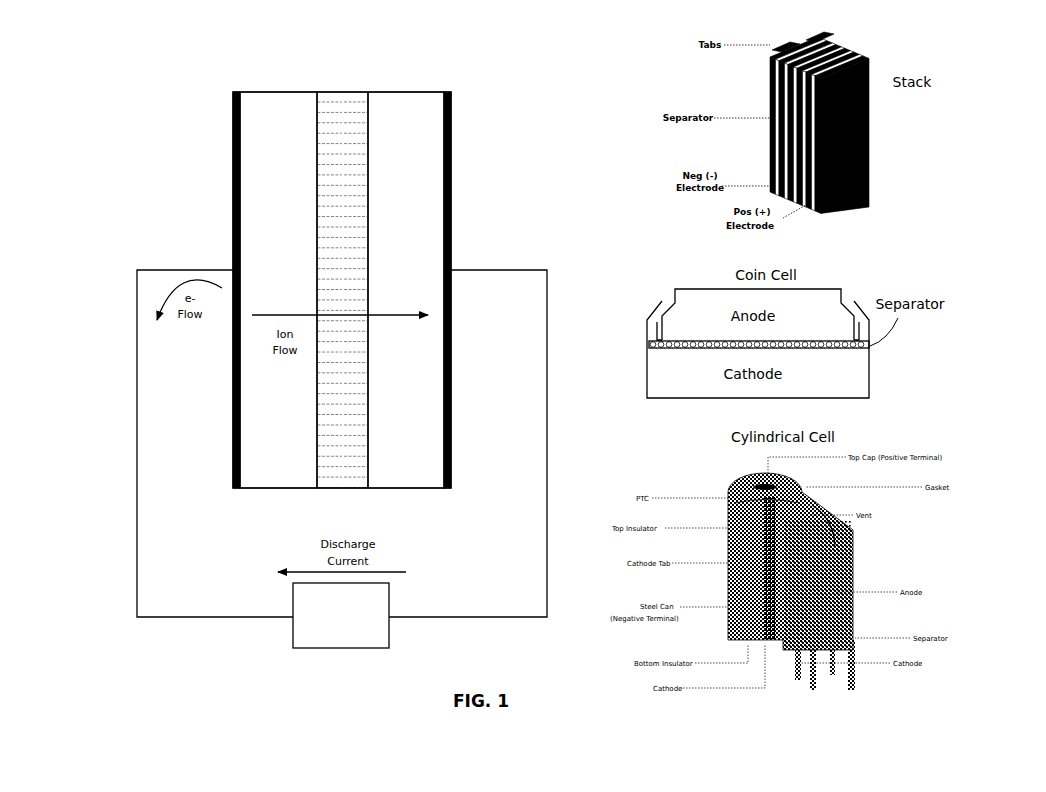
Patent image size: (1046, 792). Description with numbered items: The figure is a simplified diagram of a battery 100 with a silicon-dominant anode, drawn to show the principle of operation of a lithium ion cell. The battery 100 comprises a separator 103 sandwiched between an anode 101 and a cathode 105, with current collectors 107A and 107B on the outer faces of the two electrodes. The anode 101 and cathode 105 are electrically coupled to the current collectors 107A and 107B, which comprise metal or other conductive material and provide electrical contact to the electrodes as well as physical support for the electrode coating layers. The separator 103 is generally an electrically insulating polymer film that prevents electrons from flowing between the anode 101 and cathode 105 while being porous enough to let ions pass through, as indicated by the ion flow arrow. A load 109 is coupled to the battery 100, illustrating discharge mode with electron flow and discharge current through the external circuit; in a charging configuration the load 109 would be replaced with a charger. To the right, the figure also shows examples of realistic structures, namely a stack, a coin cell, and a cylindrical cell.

The battery 100 is at (123, 97).
The anode 101 is at (278, 290).
The separator 103 is at (343, 92).
The cathode 105 is at (406, 290).
The current collector 107A is at (233, 110).
The current collector 107B is at (452, 110).
The load 109 is at (341, 615).